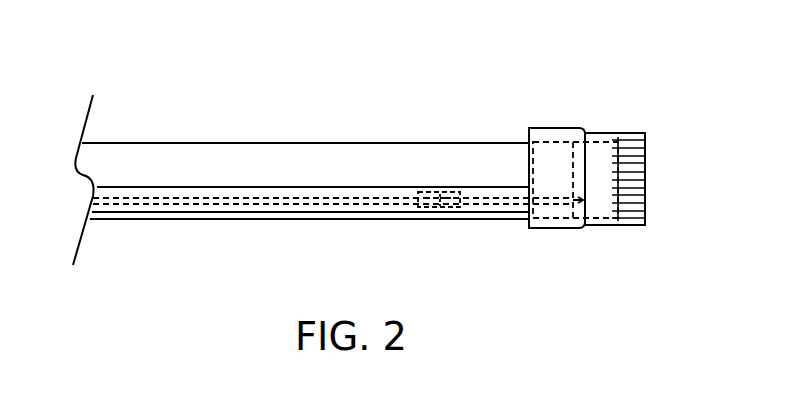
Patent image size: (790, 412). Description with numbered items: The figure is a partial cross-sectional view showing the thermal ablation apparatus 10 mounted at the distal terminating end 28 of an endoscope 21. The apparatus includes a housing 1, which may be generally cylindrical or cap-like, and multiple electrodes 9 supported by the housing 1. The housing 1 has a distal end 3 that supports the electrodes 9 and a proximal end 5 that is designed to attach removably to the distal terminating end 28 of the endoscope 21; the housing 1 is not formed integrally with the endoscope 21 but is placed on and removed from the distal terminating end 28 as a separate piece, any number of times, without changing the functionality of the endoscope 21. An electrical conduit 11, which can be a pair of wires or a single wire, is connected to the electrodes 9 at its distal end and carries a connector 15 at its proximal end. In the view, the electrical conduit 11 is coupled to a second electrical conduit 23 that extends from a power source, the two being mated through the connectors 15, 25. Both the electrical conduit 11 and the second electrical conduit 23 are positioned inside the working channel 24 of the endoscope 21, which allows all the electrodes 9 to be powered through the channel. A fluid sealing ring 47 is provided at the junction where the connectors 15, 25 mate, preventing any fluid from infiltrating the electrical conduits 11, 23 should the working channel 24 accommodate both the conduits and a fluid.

The housing 1 is at (607, 132).
The distal end 3 is at (631, 226).
The proximal end 5 is at (558, 228).
The electrodes 9 is at (645, 147).
The thermal ablation apparatus 10 is at (581, 70).
The electrical conduit 11 is at (513, 208).
The connector 15 is at (450, 209).
The endoscope 21 is at (193, 143).
The second electrical conduit 23 is at (328, 200).
The working channel 24 is at (292, 187).
The connector 25 is at (427, 210).
The distal terminating end 28 is at (576, 212).
The fluid sealing ring 47 is at (440, 195).